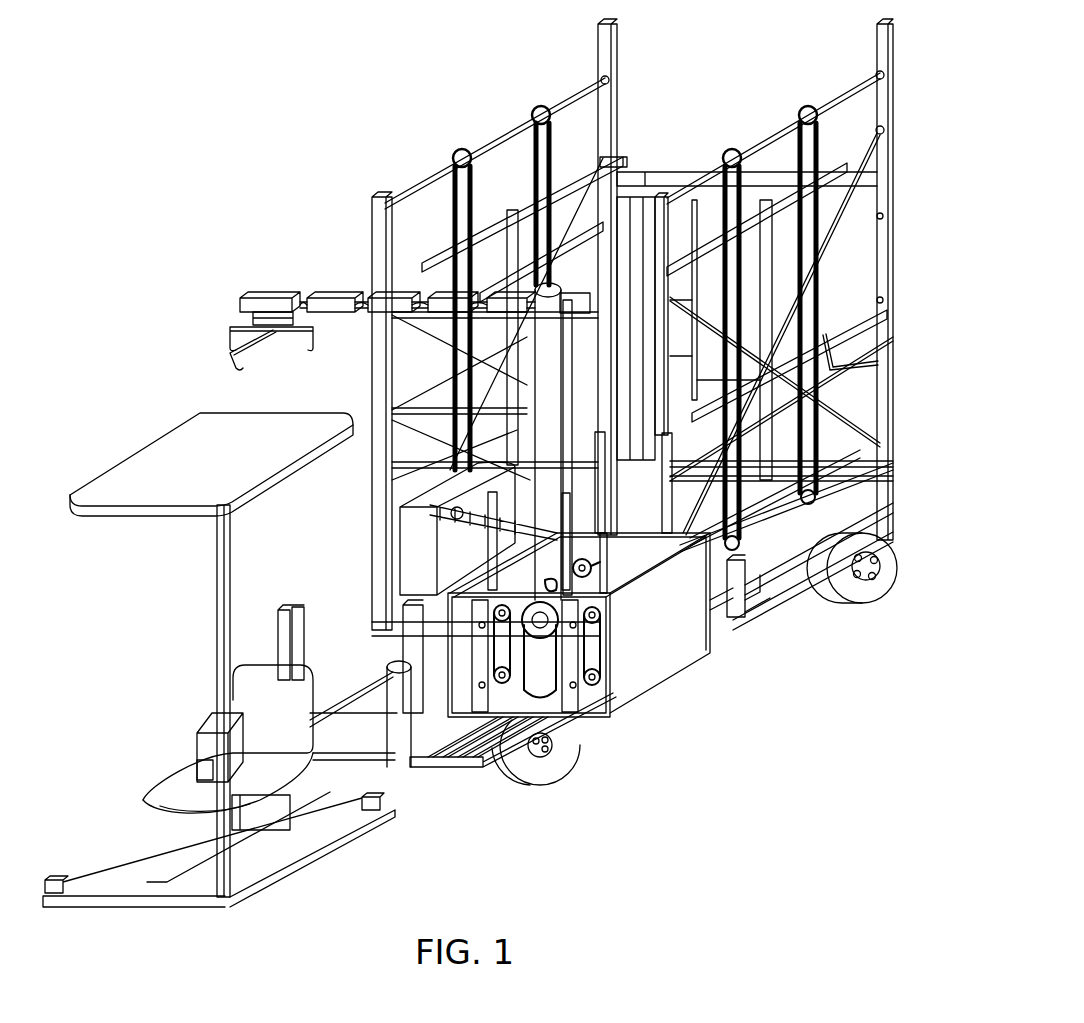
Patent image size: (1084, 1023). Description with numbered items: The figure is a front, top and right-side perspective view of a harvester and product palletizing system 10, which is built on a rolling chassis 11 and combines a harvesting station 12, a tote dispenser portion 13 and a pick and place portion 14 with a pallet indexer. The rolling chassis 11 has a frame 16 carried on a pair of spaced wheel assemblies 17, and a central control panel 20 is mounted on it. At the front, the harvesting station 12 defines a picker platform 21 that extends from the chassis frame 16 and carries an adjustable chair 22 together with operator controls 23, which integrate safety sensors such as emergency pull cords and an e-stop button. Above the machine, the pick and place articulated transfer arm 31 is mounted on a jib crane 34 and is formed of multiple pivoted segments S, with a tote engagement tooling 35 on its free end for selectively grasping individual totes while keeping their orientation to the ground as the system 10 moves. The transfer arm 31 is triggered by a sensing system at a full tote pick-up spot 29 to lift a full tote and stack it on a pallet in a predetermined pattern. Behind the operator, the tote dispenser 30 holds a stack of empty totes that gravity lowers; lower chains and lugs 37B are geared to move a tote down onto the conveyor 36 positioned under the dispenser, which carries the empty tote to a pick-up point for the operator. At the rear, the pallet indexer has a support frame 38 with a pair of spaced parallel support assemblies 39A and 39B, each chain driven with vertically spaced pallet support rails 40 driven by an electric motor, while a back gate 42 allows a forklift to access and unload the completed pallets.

The harvester and product palletizing system 10 is at (745, 279).
The rolling chassis 11 is at (820, 615).
The harvesting station 12 is at (205, 655).
The tote dispenser portion 13 is at (788, 624).
The pick and place portion 14 is at (194, 274).
The frame 16 is at (786, 569).
The wheel assemblies 17 is at (727, 659).
The central control panel 20 is at (361, 490).
The picker platform 21 is at (245, 849).
The adjustable chair 22 is at (208, 717).
The operator controls 23 is at (148, 753).
The full tote pick-up spot 29 is at (286, 669).
The tote dispenser 30 is at (611, 625).
The pick and place articulated transfer arm 31 is at (407, 268).
The jib crane 34 is at (430, 397).
The tote engagement tooling 35 is at (194, 325).
The conveyor 36 is at (513, 666).
The lower chains and lugs 37B is at (611, 705).
The support frame 38 is at (777, 330).
The support assembly 39A is at (487, 238).
The support assembly 39B is at (815, 310).
The pallet support rails 40 is at (667, 258).
The back gate 42 is at (893, 347).
The pivoted segments S is at (385, 219).